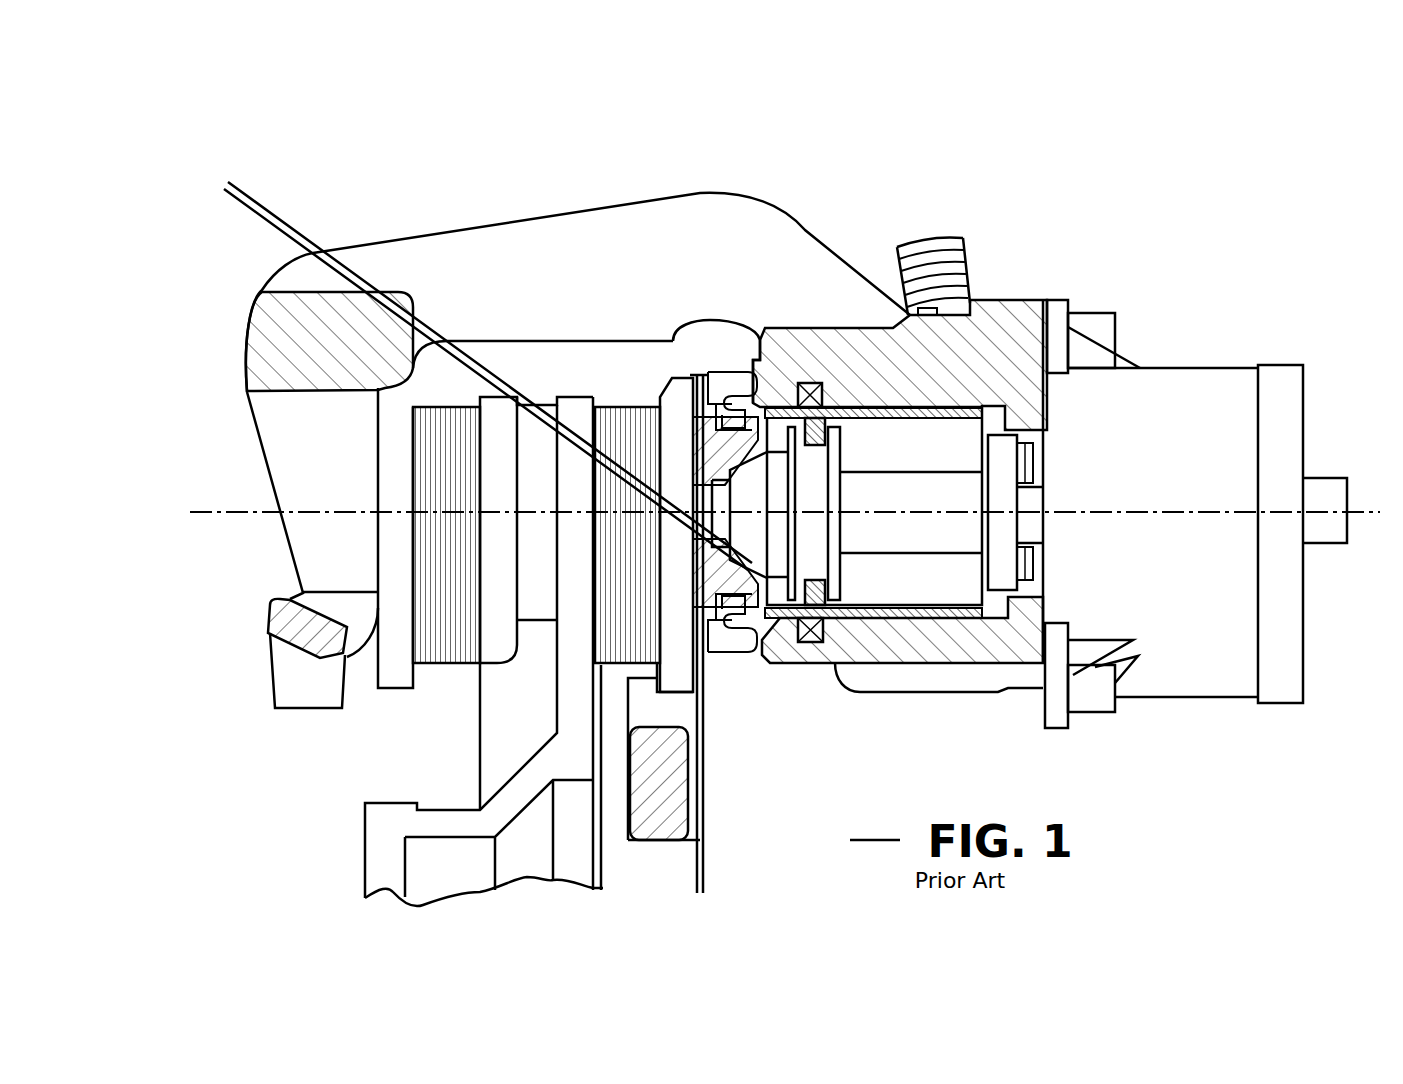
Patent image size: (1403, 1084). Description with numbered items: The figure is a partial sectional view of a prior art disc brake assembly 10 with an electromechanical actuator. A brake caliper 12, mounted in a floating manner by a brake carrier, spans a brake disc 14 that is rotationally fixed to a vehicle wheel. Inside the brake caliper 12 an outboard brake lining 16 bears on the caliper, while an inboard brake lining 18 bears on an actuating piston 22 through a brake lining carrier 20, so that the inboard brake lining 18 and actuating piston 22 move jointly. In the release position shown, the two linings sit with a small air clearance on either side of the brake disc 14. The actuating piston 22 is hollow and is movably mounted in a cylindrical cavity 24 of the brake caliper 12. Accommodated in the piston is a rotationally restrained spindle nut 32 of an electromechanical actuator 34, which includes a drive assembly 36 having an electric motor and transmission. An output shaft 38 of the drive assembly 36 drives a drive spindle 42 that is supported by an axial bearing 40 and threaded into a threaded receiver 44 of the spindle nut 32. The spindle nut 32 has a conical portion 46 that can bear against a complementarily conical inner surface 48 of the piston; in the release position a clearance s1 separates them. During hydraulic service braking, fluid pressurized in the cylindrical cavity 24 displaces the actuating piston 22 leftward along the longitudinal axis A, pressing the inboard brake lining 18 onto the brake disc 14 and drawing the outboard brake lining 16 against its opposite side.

The disc brake assembly 10 is at (1140, 196).
The brake caliper 12 is at (425, 262).
The brake disc 14 is at (495, 708).
The outboard brake lining 16 is at (430, 447).
The inboard brake lining 18 is at (627, 435).
The brake lining carrier 20 is at (677, 435).
The actuating piston 22 is at (857, 403).
The cylindrical cavity 24 is at (993, 423).
The spindle nut 32 is at (907, 500).
The electromechanical actuator 34 is at (1229, 368).
The drive assembly 36 is at (1198, 680).
The output shaft 38 is at (1023, 500).
The axial bearing 40 is at (1045, 447).
The drive spindle 42 is at (1002, 532).
The threaded receiver 44 is at (950, 470).
The conical portion 46 is at (762, 400).
The conical inner surface 48 is at (725, 470).
The longitudinal axis A is at (262, 513).
The clearance s1 is at (252, 166).